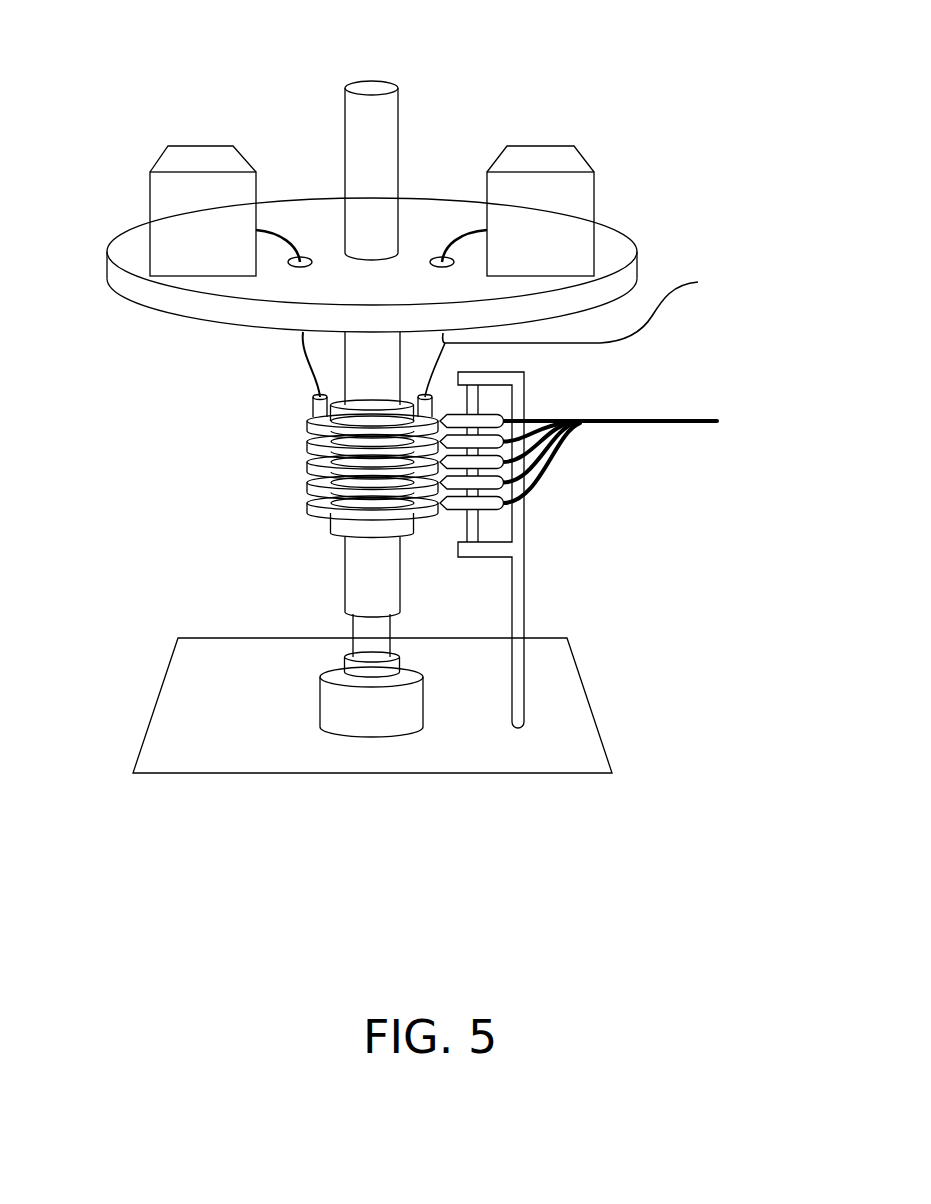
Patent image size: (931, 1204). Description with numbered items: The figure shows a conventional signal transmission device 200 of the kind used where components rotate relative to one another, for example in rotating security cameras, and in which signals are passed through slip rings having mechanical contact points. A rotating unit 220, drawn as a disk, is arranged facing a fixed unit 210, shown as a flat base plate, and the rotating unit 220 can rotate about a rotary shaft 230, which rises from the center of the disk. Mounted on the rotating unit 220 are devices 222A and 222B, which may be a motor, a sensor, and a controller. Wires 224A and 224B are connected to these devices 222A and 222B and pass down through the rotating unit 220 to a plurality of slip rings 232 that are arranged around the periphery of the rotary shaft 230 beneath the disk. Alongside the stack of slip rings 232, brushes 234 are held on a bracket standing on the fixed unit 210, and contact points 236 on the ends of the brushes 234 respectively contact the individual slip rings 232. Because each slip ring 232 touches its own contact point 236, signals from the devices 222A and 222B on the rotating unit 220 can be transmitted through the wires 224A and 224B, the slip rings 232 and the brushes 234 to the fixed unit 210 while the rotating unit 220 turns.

The signal transmission device 200 is at (697, 105).
The fixed unit 210 is at (240, 650).
The rotating unit 220 is at (432, 205).
The device 222A is at (538, 152).
The device 222B is at (198, 152).
The wire 224A is at (594, 323).
The wire 224B is at (305, 360).
The rotary shaft 230 is at (373, 85).
The slip rings 232 is at (307, 506).
The brushes 234 is at (493, 513).
The contact points 236 is at (443, 512).